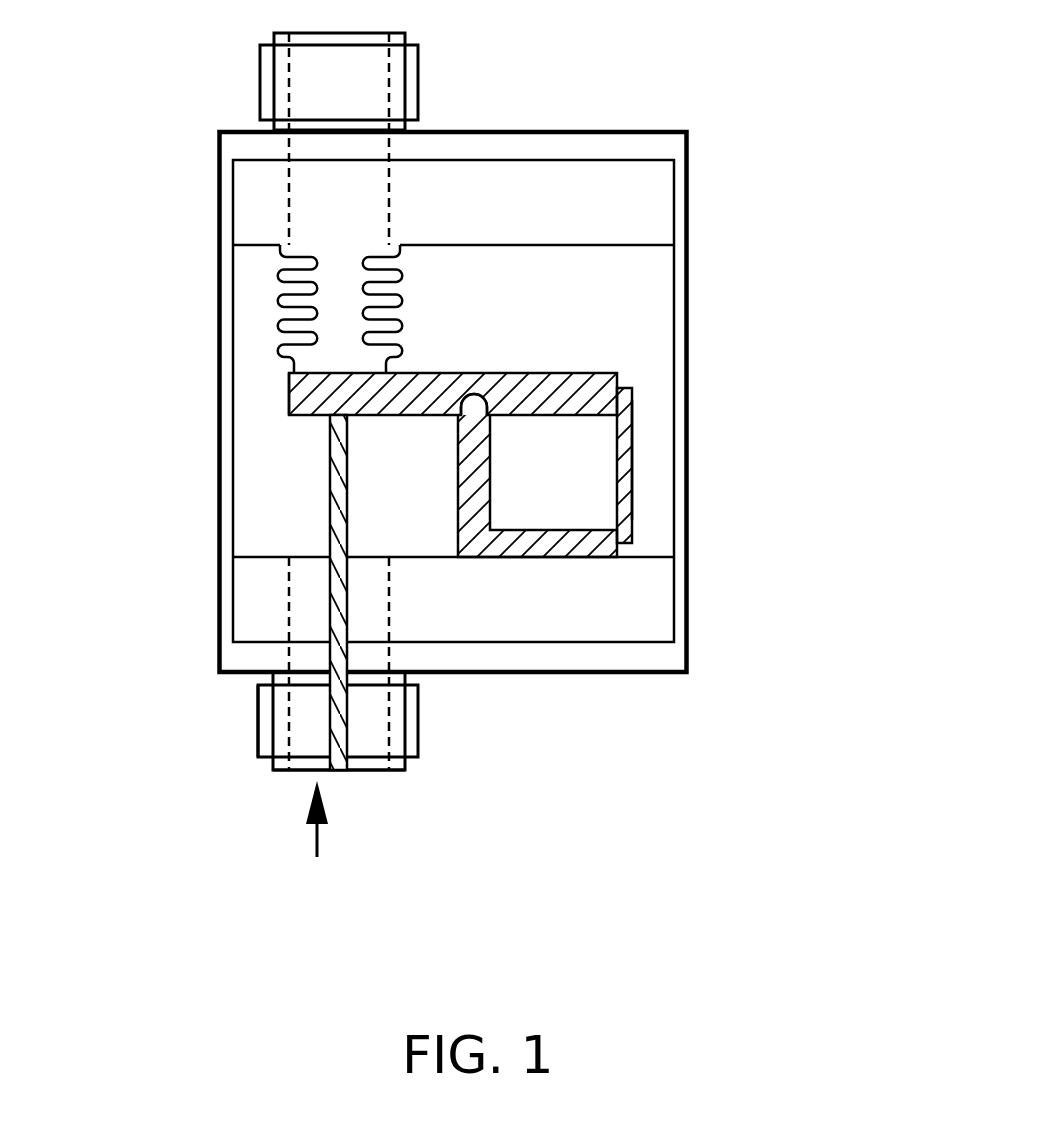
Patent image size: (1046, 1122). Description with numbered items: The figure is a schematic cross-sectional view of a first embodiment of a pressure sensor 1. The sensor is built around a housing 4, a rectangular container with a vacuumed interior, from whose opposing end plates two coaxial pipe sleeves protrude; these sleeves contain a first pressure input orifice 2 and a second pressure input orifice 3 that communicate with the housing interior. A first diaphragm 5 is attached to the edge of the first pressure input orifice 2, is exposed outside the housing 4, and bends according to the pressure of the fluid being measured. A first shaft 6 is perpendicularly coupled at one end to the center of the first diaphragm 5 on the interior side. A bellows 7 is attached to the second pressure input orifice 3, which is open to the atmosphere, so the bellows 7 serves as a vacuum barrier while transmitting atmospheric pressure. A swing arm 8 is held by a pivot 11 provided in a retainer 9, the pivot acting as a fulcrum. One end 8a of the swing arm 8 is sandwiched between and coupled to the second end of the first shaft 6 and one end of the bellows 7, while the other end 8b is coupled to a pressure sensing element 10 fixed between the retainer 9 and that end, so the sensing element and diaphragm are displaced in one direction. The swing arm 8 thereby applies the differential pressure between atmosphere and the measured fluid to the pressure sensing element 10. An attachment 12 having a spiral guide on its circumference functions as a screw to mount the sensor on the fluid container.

The pressure sensor 1 is at (480, 474).
The first pressure input orifice 2 is at (303, 740).
The second pressure input orifice 3 is at (332, 73).
The housing 4 is at (557, 674).
The first diaphragm 5 is at (366, 773).
The first shaft 6 is at (330, 483).
The bellows 7 is at (345, 290).
The swing arm 8 is at (520, 372).
The end of swing arm 8a is at (295, 404).
The end of swing arm 8b is at (615, 373).
The retainer 9 is at (558, 562).
The pressure sensing element 10 is at (633, 428).
The pivot 11 is at (488, 418).
The attachment 12 is at (260, 703).